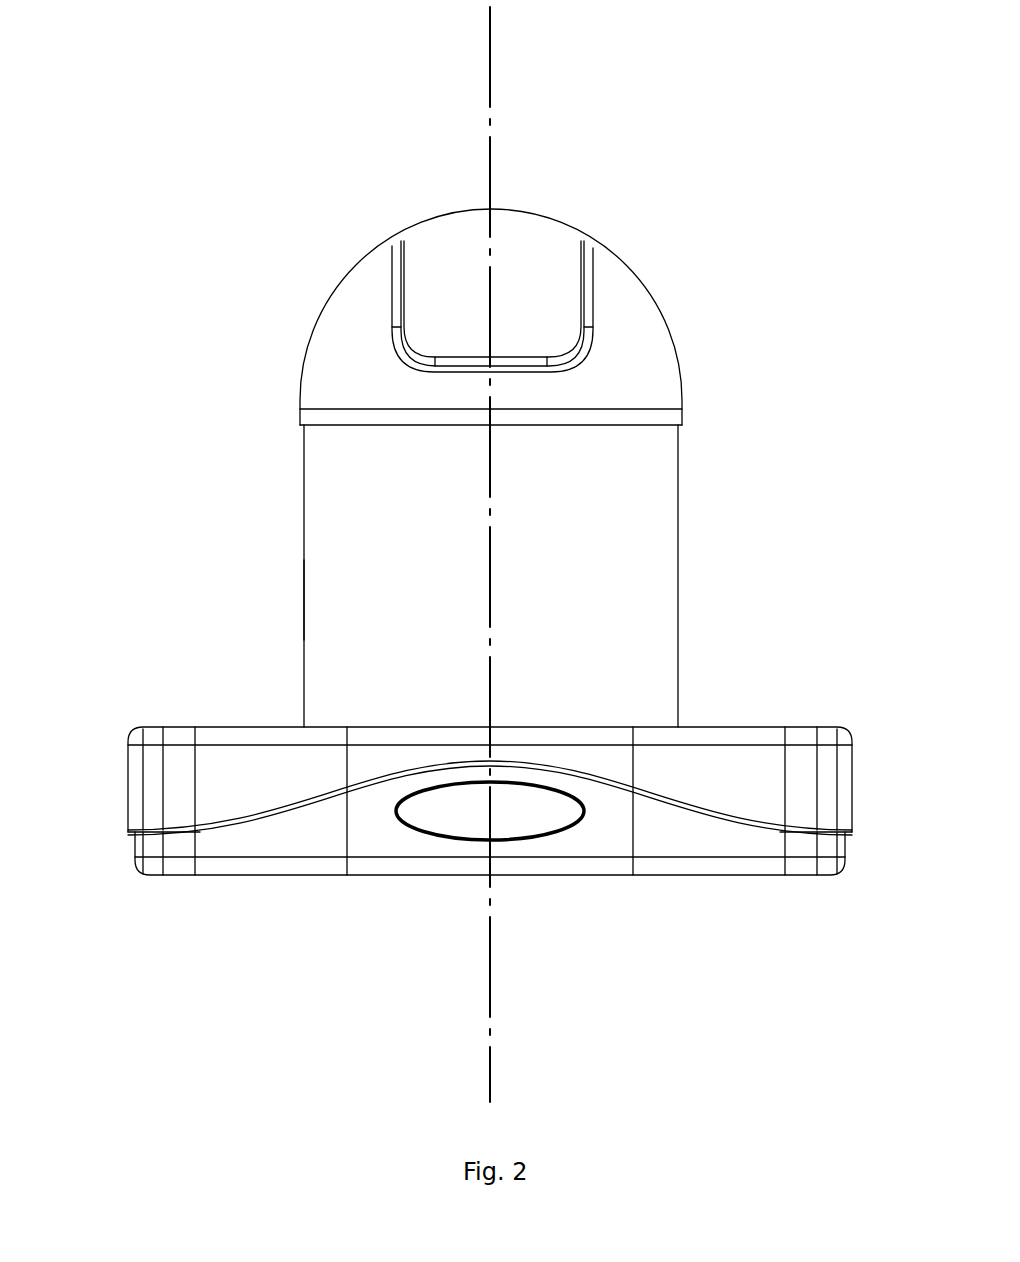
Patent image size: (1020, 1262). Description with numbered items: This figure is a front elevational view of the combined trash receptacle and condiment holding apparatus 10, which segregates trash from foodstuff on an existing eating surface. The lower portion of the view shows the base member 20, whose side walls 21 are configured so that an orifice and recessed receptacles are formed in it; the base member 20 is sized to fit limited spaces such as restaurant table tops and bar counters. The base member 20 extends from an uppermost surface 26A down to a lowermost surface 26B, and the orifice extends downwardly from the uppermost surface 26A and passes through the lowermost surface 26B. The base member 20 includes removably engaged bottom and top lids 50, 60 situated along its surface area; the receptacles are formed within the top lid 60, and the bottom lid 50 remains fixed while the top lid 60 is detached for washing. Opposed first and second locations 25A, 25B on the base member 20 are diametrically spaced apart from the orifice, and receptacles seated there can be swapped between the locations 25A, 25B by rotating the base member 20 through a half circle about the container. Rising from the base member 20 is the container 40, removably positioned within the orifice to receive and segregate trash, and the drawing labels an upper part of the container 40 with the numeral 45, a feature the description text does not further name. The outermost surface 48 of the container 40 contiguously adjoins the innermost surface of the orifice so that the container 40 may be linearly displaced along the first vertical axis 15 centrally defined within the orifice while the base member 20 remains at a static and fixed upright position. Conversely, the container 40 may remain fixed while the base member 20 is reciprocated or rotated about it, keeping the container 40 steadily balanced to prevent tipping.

The combined trash receptacle and condiment holding apparatus 10 is at (260, 124).
The first vertical axis 15 is at (491, 65).
The base member 20 is at (275, 880).
The side walls 21 is at (225, 742).
The first location 25A is at (247, 732).
The second location 25B is at (707, 727).
The uppermost surface 26A is at (740, 727).
The lowermost surface 26B is at (725, 877).
The container 40 is at (320, 497).
The domed head with channel 45 is at (541, 248).
The outermost surface 48 is at (320, 597).
The bottom lid 50 is at (150, 847).
The top lid 60 is at (150, 800).